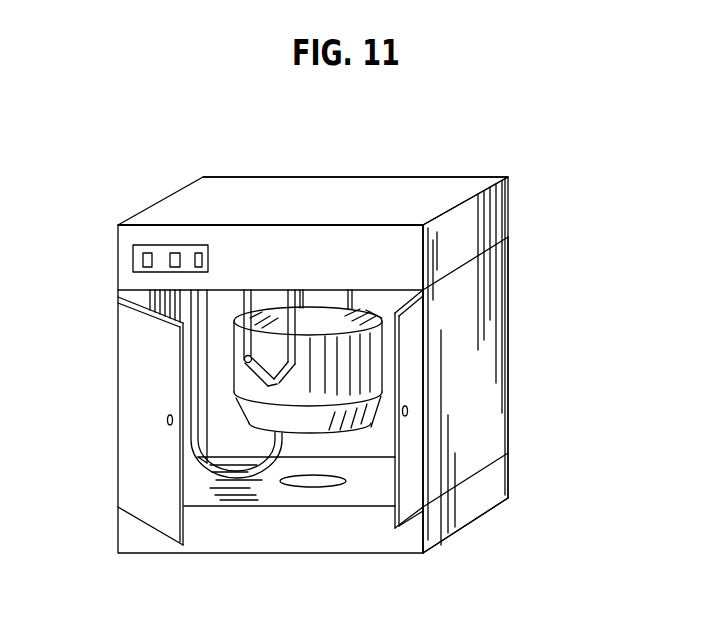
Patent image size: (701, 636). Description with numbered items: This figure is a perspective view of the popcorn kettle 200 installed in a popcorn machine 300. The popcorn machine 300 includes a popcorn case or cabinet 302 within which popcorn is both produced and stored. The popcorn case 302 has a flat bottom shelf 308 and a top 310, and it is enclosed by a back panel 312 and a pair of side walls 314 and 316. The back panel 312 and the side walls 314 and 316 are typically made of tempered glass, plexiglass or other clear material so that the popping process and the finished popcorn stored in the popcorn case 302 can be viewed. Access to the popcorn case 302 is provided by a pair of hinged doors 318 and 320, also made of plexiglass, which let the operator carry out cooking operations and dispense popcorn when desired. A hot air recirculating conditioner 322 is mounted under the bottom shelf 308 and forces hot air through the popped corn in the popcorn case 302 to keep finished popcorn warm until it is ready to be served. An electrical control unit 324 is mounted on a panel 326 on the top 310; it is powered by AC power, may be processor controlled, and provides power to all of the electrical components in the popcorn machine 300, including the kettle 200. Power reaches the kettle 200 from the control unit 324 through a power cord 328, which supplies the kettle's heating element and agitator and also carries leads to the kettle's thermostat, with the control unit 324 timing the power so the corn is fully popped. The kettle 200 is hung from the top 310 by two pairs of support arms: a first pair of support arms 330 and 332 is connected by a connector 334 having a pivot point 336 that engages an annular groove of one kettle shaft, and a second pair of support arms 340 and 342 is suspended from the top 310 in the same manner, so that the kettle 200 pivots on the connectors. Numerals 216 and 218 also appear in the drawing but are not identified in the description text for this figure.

The popcorn machine 300 is at (100, 251).
The popcorn case 302 is at (458, 310).
The bottom shelf 308 is at (307, 498).
The top 310 is at (420, 190).
The back panel 312 is at (510, 262).
The side wall 314 is at (160, 307).
The side wall 316 is at (483, 422).
The hinged door 318 is at (133, 450).
The hinged door 320 is at (403, 528).
The hot air recirculating conditioner 322 is at (338, 487).
The electrical control unit 324 is at (143, 250).
The panel 326 is at (187, 243).
The power cord 328 is at (258, 478).
The support arm 330 is at (245, 296).
The support arm 332 is at (333, 305).
The connector 334 is at (270, 380).
The pivot point 336 is at (282, 375).
The support arm 340 is at (305, 303).
The support arm 342 is at (366, 310).
The hanger rod 216 is at (271, 303).
The coupling 218 is at (396, 305).
The popcorn kettle 200 is at (395, 385).